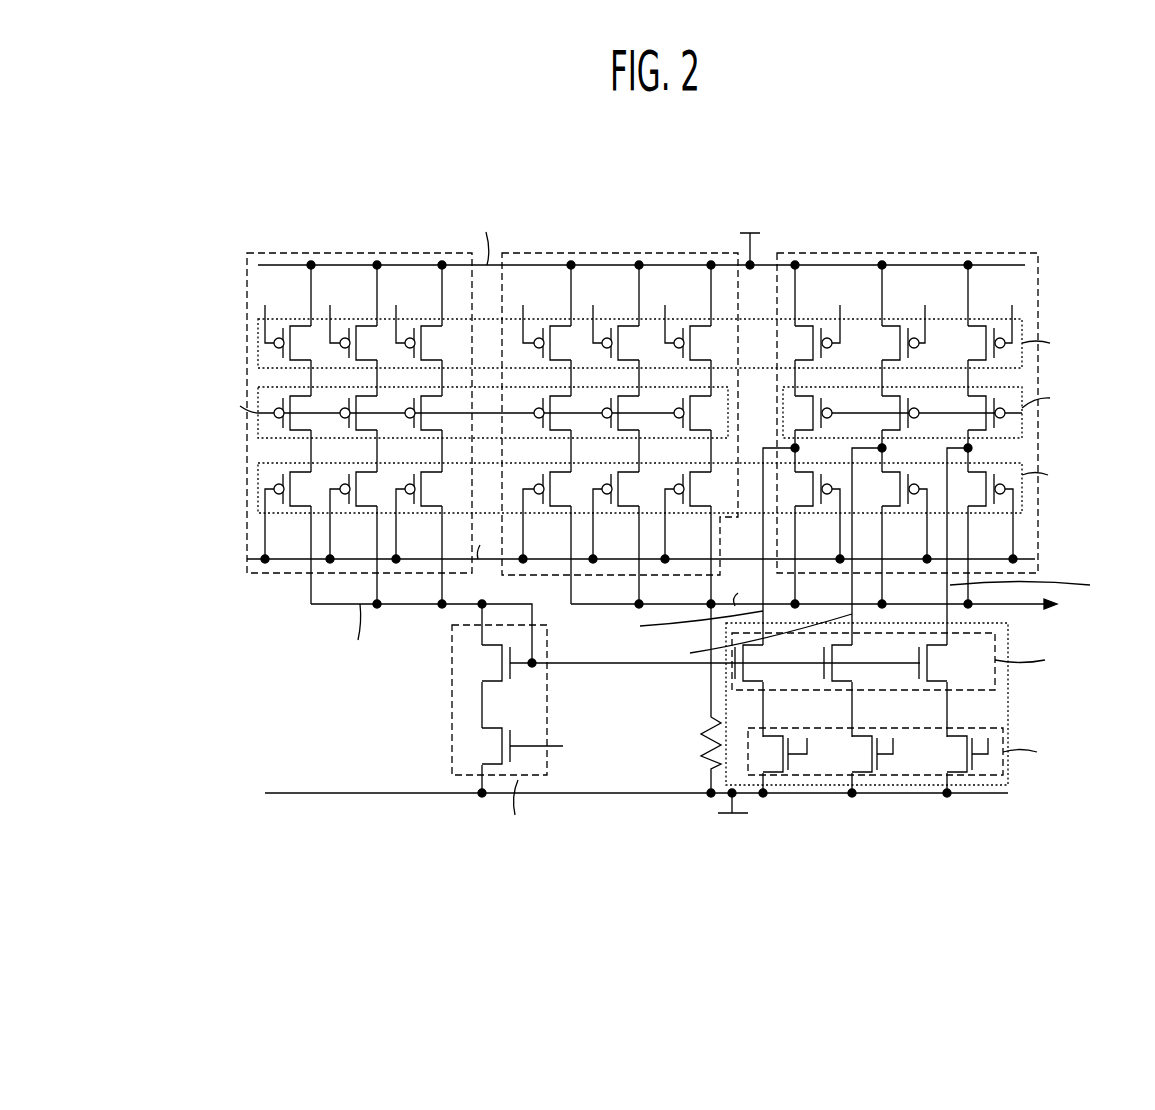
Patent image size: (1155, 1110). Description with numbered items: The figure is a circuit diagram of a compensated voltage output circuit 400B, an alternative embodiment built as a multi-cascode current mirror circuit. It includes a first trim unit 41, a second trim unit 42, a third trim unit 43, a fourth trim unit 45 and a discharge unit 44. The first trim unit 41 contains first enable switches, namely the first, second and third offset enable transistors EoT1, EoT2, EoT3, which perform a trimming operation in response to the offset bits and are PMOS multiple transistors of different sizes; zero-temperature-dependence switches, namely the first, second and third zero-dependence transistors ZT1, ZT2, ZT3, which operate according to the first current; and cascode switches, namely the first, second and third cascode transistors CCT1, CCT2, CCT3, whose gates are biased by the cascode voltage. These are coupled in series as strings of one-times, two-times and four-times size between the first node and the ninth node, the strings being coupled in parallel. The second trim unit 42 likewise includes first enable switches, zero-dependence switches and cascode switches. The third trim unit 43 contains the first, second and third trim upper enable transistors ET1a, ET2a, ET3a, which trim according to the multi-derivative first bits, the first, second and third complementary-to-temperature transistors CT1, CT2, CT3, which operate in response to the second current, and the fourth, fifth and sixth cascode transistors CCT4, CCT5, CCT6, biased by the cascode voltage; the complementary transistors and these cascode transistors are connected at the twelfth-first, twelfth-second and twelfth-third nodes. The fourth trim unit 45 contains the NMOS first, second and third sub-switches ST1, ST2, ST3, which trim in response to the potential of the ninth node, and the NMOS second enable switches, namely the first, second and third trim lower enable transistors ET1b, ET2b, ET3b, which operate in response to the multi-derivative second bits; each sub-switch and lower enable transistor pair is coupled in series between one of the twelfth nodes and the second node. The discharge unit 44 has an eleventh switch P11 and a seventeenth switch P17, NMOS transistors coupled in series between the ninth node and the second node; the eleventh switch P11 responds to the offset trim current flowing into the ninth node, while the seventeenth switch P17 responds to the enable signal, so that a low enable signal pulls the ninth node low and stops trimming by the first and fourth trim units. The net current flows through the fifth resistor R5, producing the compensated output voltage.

The compensated voltage output circuit 400B is at (1073, 187).
The first trim unit 41 is at (427, 253).
The second trim unit 42 is at (690, 253).
The third trim unit 43 is at (1015, 253).
The discharge unit 44 is at (452, 722).
The fourth trim unit 45 is at (726, 690).
The first offset enable transistor EoT1 is at (283, 355).
The second offset enable transistor EoT2 is at (349, 360).
The third offset enable transistor EoT3 is at (413, 360).
The first ZTAT transistor ZT1 is at (283, 427).
The second ZTAT transistor ZT2 is at (349, 428).
The third ZTAT transistor ZT3 is at (413, 430).
The first cascode transistor CCT1 is at (283, 506).
The second cascode transistor CCT2 is at (349, 506).
The third cascode transistor CCT3 is at (413, 506).
The fourth cascode transistor CCT4 is at (825, 502).
The fifth cascode transistor CCT5 is at (912, 501).
The sixth cascode transistor CCT6 is at (1000, 497).
The first CTAT transistor CT1 is at (832, 427).
The second CTAT transistor CT2 is at (919, 430).
The third CTAT transistor CT3 is at (996, 399).
The first trim upper enable transistor ET1a is at (824, 326).
The second trim upper enable transistor ET2a is at (911, 328).
The third trim upper enable transistor ET3a is at (996, 333).
The first trim lower enable transistor ET1b is at (793, 766).
The second trim lower enable transistor ET2b is at (881, 766).
The third trim lower enable transistor ET3b is at (976, 766).
The first sub-switch ST1 is at (735, 667).
The second sub-switch ST2 is at (833, 672).
The third sub-switch ST3 is at (927, 648).
The eleventh switch P11 is at (487, 663).
The seventeenth switch P17 is at (487, 746).
The fifth resistor R5 is at (697, 698).